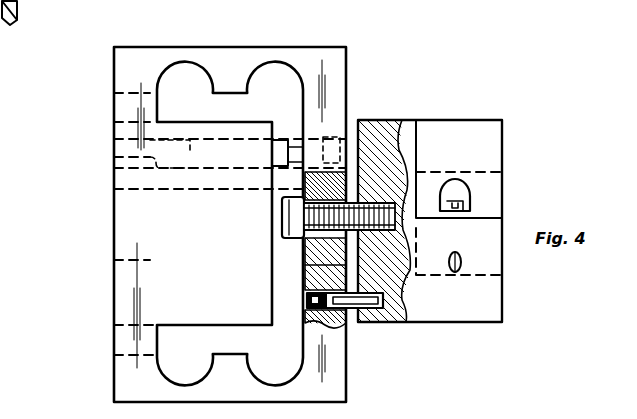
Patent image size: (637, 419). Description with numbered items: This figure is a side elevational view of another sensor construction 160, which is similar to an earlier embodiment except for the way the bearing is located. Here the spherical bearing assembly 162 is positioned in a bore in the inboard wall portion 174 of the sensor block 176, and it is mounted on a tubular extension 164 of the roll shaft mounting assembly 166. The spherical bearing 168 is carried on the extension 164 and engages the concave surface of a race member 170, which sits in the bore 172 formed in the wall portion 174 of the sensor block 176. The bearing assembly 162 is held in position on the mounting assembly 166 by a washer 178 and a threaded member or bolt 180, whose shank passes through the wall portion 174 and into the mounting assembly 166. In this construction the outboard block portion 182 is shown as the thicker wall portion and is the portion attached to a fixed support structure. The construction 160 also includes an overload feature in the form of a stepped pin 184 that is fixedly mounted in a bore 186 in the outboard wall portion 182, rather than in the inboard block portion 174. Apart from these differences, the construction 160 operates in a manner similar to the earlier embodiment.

The sensor construction 160 is at (288, 27).
The spherical bearing assembly 162 is at (316, 170).
The tubular extension 164 is at (404, 233).
The roll shaft mounting assembly 166 is at (479, 330).
The spherical bearing 168 is at (353, 193).
The race member 170 is at (306, 183).
The bore 172 is at (305, 262).
The wall portion 174 is at (333, 335).
The sensor block 176 is at (110, 384).
The washer 178 is at (282, 236).
The threaded member or bolt 180 is at (303, 215).
The outboard block portion 182 is at (155, 283).
The stepped pin 184 is at (112, 158).
The bore 186 is at (113, 141).